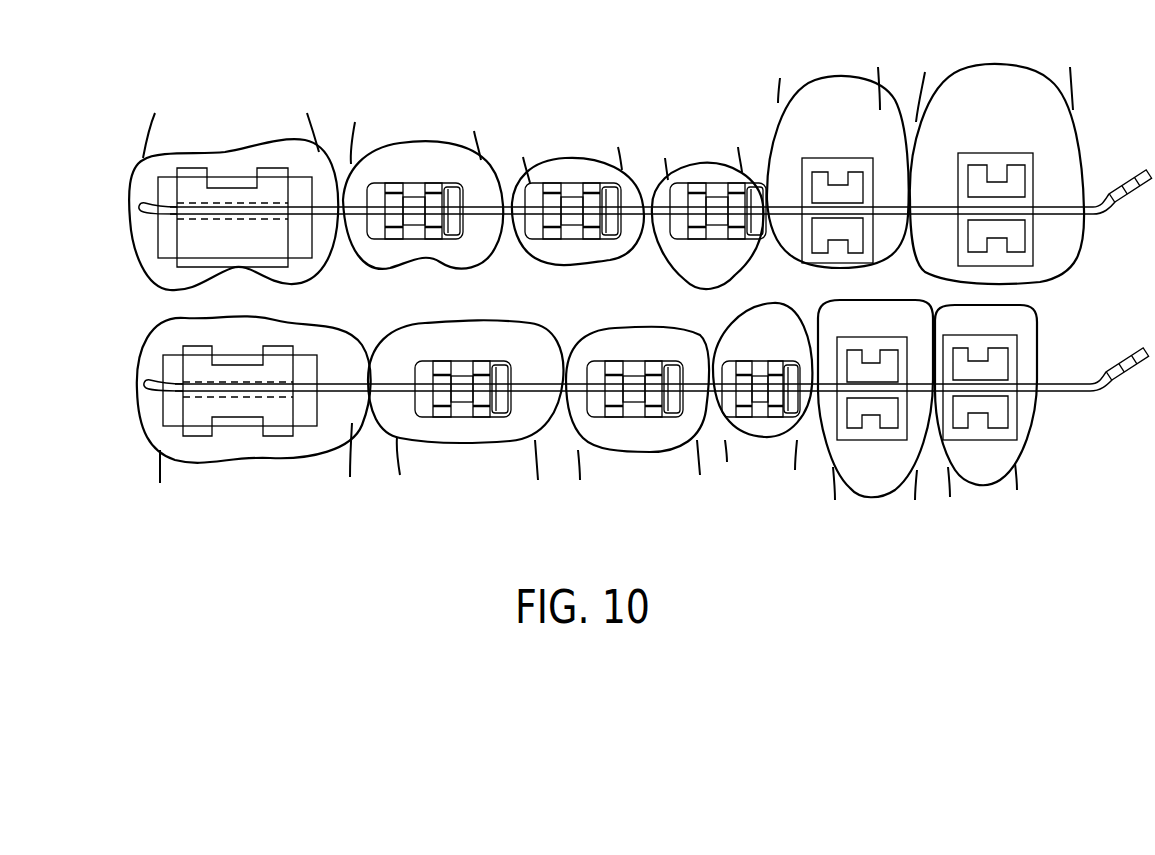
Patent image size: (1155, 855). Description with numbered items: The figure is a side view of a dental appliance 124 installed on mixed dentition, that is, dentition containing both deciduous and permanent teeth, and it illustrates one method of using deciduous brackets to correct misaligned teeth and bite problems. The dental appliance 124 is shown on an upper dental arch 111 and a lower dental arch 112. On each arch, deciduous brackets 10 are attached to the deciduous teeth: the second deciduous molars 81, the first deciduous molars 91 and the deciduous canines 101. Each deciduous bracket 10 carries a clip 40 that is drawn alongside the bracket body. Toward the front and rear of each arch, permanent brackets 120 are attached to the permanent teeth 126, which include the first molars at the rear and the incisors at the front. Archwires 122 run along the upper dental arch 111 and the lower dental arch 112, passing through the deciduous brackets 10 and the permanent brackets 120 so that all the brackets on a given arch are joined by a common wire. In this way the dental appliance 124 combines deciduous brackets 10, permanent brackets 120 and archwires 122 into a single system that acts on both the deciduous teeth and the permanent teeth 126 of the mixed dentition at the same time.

The deciduous bracket 10 is at (410, 170).
The ligating clip 40 is at (455, 185).
The second deciduous molar 81 is at (455, 272).
The first deciduous molar 91 is at (597, 266).
The deciduous canine 101 is at (736, 328).
The upper dental arch 111 is at (100, 217).
The lower dental arch 112 is at (101, 384).
The permanent bracket 120 is at (237, 168).
The archwire 122 is at (1100, 216).
The dental appliance 124 is at (1056, 476).
The permanent tooth 126 is at (178, 153).